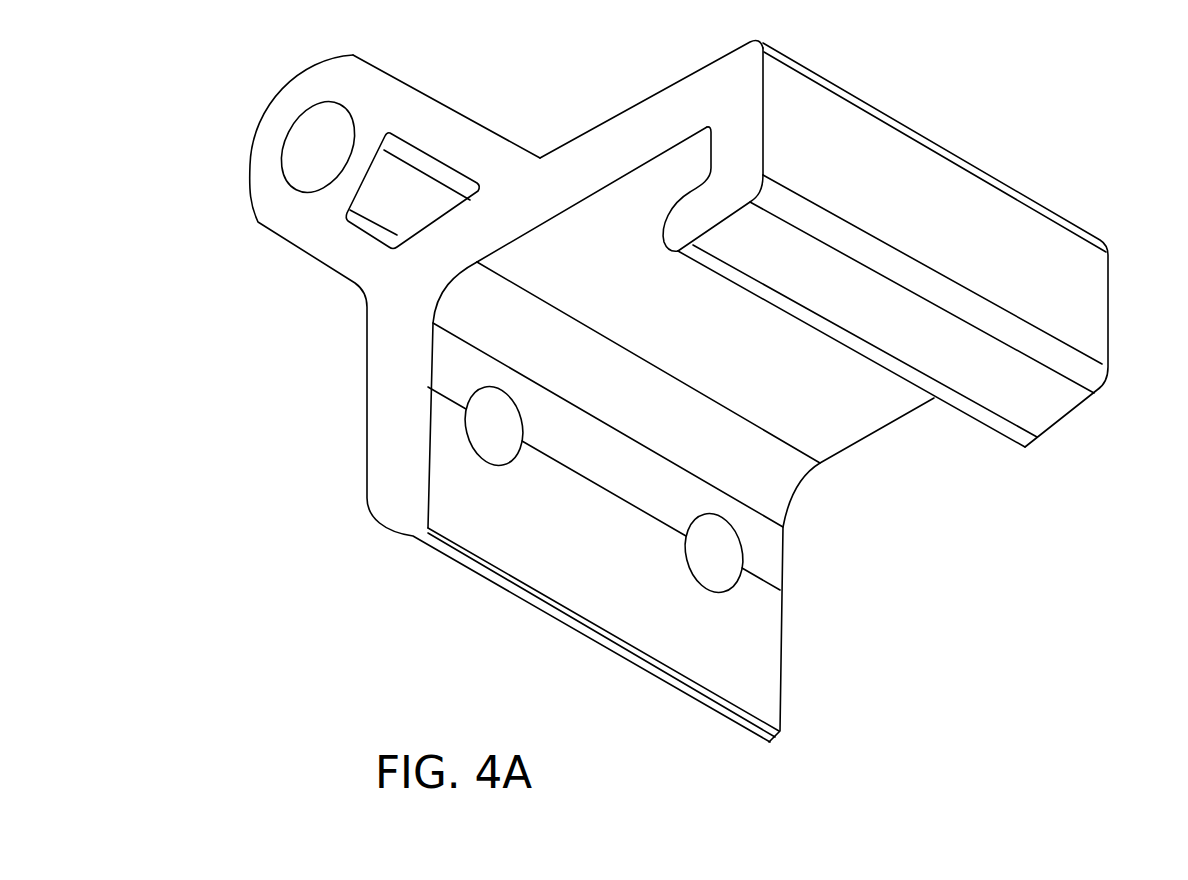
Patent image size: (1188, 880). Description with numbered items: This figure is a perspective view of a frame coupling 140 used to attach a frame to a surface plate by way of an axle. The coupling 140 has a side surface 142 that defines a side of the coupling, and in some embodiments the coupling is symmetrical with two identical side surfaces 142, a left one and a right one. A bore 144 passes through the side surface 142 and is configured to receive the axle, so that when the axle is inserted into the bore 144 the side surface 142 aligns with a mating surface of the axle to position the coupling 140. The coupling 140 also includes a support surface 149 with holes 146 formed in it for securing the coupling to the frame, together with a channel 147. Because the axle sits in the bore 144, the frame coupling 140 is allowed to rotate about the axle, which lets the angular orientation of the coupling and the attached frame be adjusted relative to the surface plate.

The frame coupling 140 is at (225, 495).
The side surface 142 is at (593, 155).
The bore 144 is at (312, 143).
The holes 146 is at (495, 435).
The channel 147 is at (690, 160).
The support surface 149 is at (762, 683).